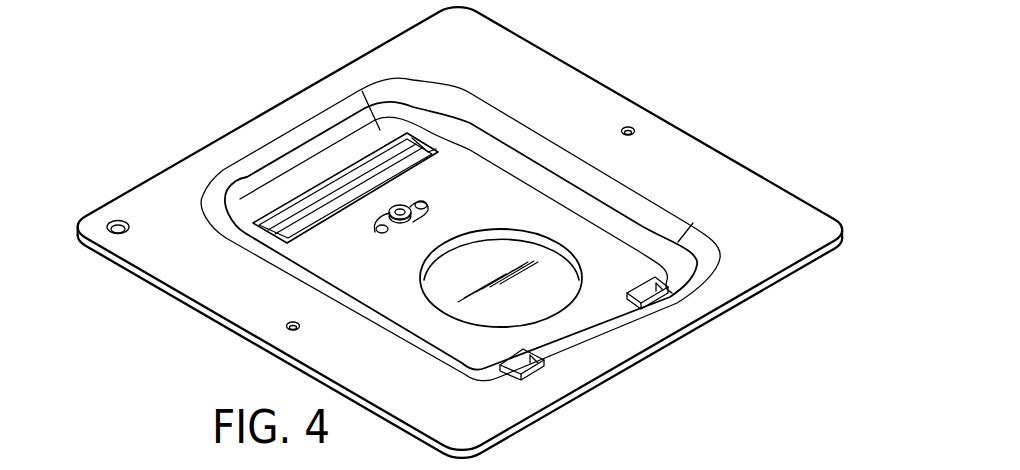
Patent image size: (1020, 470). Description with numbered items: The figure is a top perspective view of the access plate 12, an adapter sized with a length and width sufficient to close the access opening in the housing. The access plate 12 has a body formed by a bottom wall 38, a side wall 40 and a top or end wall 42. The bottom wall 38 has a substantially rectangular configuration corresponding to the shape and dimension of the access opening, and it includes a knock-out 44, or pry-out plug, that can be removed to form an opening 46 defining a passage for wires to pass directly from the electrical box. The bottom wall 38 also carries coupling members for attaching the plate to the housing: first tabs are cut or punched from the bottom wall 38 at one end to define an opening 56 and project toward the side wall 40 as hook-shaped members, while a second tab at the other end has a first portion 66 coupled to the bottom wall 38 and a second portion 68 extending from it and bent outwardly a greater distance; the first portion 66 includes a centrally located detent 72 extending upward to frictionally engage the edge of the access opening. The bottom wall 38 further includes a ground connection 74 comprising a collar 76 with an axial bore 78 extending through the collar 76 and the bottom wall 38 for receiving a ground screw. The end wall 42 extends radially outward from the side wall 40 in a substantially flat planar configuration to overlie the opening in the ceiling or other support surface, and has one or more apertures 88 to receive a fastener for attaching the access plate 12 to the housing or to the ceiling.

The access plate 12 is at (255, 88).
The bottom wall 38 is at (578, 324).
The side wall 40 is at (522, 170).
The end wall 42 is at (748, 264).
The knock-out 44 is at (470, 287).
The opening 46 is at (545, 242).
The opening 56 is at (545, 372).
The first portion 66 is at (268, 236).
The second portion 68 is at (273, 205).
The detent 72 is at (355, 200).
The ground connection 74 is at (393, 192).
The collar 76 is at (415, 228).
The axial bore 78 is at (388, 208).
The apertures 88 is at (628, 128).